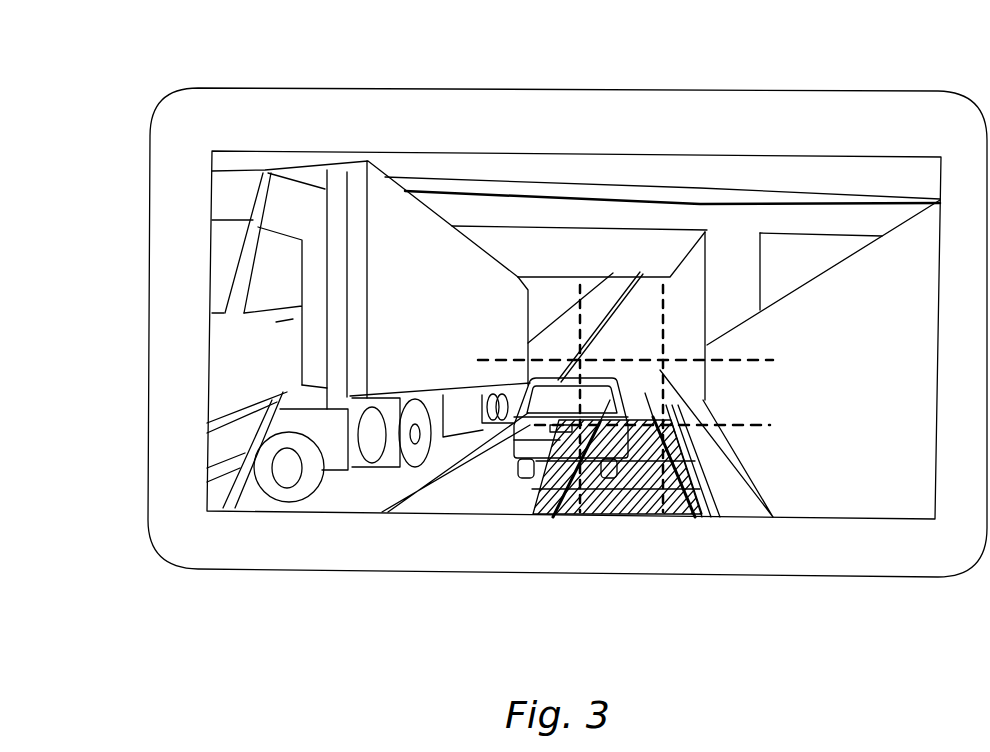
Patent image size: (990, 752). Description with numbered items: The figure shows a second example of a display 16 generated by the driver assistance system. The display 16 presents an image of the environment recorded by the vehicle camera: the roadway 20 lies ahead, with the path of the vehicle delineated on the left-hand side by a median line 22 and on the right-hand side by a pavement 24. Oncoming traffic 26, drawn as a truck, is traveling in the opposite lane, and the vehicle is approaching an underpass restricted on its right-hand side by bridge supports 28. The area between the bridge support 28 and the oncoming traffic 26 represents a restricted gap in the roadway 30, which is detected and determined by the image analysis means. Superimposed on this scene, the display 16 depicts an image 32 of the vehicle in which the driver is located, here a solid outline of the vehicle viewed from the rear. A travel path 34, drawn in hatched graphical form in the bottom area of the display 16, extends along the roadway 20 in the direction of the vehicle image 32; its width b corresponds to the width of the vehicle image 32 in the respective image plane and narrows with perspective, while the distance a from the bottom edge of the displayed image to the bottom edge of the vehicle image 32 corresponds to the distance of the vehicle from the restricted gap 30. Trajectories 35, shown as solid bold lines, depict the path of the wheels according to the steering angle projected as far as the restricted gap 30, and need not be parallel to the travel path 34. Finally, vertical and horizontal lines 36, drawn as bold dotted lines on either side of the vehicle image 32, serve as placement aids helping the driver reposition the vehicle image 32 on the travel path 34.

The display 16 is at (403, 120).
The roadway 20 is at (486, 480).
The median line 22 is at (434, 482).
The pavement 24 is at (712, 471).
The oncoming traffic 26 is at (449, 311).
The bridge supports 28 is at (733, 268).
The restricted gap in the roadway 30 is at (636, 323).
The image of the vehicle 32 is at (617, 357).
The travel path 34 is at (573, 514).
The trajectories 35 is at (708, 514).
The vertical and horizontal lines 36 is at (545, 357).
The distance a is at (707, 463).
The width of the travel path b is at (597, 516).